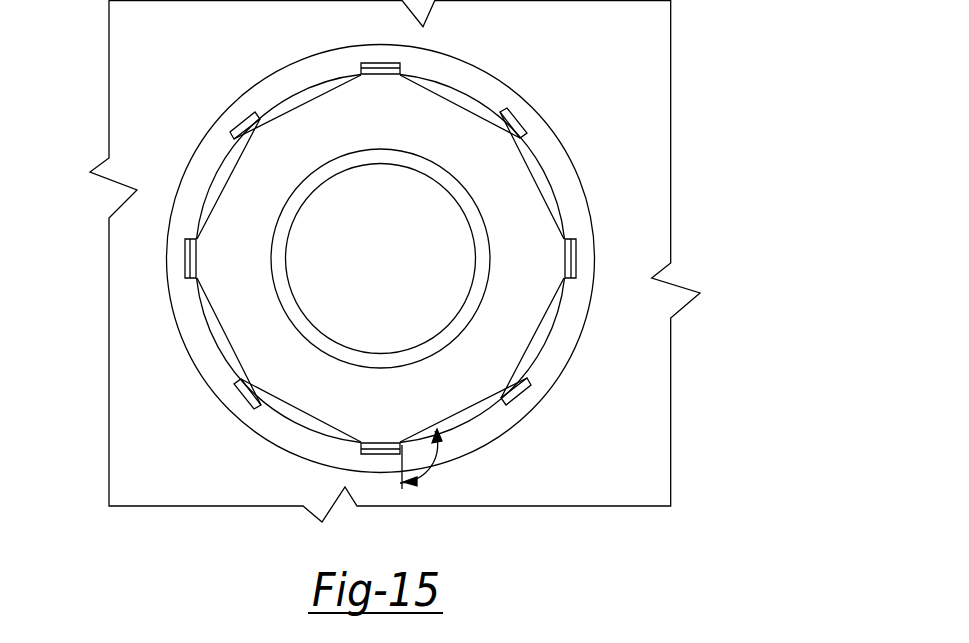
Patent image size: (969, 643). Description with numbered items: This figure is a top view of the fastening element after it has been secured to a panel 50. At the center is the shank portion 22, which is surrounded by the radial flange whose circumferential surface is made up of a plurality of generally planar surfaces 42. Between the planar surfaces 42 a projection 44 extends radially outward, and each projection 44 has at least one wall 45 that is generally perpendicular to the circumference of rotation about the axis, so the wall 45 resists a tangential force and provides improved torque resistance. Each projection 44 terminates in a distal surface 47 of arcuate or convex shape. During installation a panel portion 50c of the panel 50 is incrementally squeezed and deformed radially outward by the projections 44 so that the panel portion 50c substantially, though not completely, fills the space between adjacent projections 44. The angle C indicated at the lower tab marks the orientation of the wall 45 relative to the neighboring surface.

The shank portion 22 is at (378, 277).
The generally planar surfaces 42 is at (447, 96).
The projection 44 is at (520, 122).
The wall 45 is at (524, 139).
The distal surface 47 is at (185, 260).
The panel 50 is at (604, 457).
The panel portion 50c is at (555, 203).
The angle C is at (440, 458).